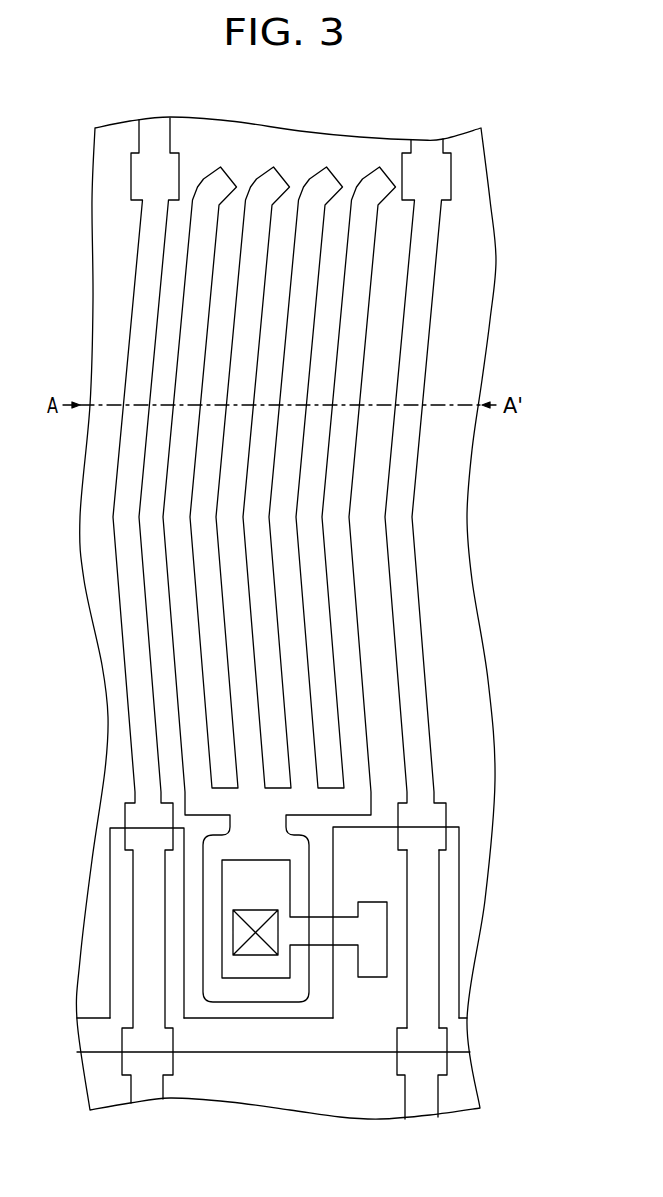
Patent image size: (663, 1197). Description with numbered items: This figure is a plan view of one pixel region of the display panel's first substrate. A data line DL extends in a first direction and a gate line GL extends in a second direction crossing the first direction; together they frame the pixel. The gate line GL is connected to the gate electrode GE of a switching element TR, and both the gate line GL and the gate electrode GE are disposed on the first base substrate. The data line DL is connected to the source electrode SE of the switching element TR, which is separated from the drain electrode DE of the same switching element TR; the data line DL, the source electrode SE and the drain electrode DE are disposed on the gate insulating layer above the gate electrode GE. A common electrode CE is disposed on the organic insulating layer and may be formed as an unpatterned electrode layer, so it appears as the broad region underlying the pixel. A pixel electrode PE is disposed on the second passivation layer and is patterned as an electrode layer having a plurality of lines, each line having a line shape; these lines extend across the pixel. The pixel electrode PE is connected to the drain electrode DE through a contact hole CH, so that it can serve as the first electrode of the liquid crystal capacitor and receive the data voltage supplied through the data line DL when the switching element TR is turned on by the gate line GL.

The pixel electrode PE is at (178, 555).
The data line DL is at (402, 555).
The common electrode CE is at (102, 665).
The gate line GL is at (257, 1038).
The gate electrode GE is at (450, 880).
The source electrode SE is at (428, 920).
The drain electrode DE is at (377, 957).
The contact hole CH is at (233, 934).
The switching element TR is at (337, 927).